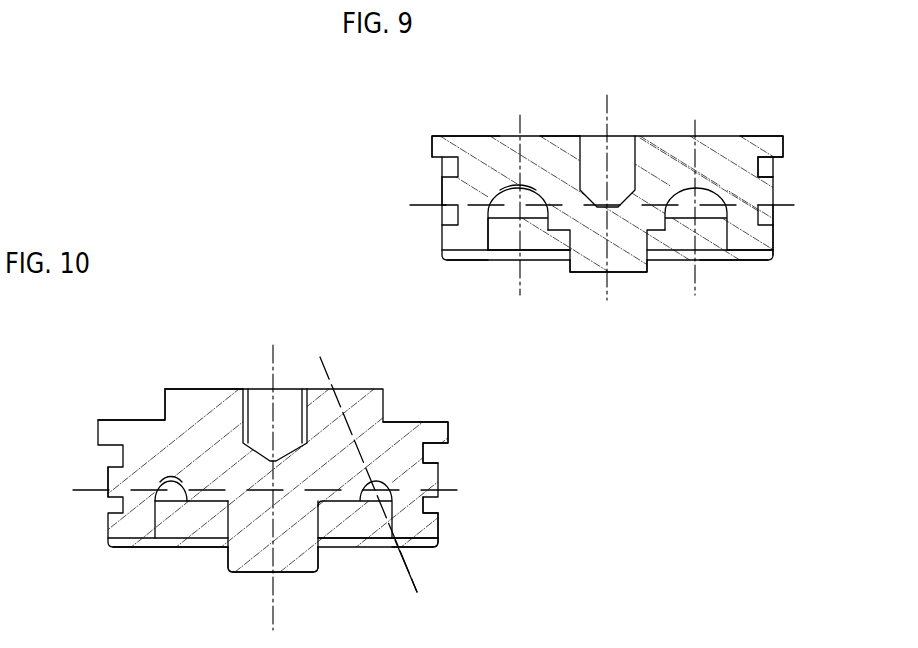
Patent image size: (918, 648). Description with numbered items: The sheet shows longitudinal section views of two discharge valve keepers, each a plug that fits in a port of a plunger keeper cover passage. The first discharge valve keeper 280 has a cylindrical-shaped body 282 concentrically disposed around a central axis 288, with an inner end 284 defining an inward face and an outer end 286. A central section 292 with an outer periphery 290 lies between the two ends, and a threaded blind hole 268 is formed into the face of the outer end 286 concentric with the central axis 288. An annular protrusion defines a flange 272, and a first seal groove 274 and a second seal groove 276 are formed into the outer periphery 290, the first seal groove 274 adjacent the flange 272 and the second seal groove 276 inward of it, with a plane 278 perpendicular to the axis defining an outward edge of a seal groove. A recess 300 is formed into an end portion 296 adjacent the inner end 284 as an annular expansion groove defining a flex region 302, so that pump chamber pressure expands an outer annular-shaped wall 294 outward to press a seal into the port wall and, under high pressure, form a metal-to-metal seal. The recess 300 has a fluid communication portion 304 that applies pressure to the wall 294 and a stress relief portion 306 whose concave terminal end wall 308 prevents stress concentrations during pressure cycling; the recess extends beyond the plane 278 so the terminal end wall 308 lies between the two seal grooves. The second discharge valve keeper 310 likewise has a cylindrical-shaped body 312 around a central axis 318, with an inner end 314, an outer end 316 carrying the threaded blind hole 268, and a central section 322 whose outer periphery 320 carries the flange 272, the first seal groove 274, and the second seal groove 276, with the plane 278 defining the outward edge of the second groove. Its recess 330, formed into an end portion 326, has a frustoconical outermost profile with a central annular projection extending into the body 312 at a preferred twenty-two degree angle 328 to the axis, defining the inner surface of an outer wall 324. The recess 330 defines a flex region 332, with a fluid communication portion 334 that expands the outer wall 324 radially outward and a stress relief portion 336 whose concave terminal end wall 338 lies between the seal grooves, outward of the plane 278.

In FIG. 9, the discharge valve keeper 280 is at (474, 104).
In FIG. 9, the cylindrical-shaped body 282 is at (475, 145).
In FIG. 9, the outer end 286 is at (563, 136).
In FIG. 9, the central axis 288 is at (611, 112).
In FIG. 9, the threaded blind hole 268 is at (640, 137).
In FIG. 10, the threaded blind hole 268 is at (307, 384).
In FIG. 9, the flange 272 is at (776, 147).
In FIG. 10, the flange 272 is at (452, 432).
In FIG. 9, the first seal groove 274 is at (775, 164).
In FIG. 10, the first seal groove 274 is at (432, 455).
In FIG. 9, the flex region 302 is at (730, 197).
In FIG. 9, the second seal groove 276 is at (773, 217).
In FIG. 10, the second seal groove 276 is at (432, 506).
In FIG. 9, the outer periphery 290 is at (775, 237).
In FIG. 9, the central section 292 is at (758, 243).
In FIG. 9, the end portion 296 is at (753, 261).
In FIG. 9, the inner end 284 is at (620, 274).
In FIG. 9, the fluid communication portion 304 is at (503, 233).
In FIG. 9, the recess 300 is at (500, 243).
In FIG. 9, the outer annular-shaped wall 294 is at (472, 227).
In FIG. 9, the plane 278 is at (433, 204).
In FIG. 10, the plane 278 is at (100, 492).
In FIG. 9, the stress relief portion 306 is at (490, 196).
In FIG. 9, the terminal end wall 308 is at (515, 189).
In FIG. 10, the discharge valve keeper 310 is at (125, 349).
In FIG. 10, the outer end 316 is at (205, 405).
In FIG. 10, the central axis 318 is at (277, 367).
In FIG. 10, the cylindrical-shaped body 312 is at (170, 427).
In FIG. 10, the terminal end wall 338 is at (158, 482).
In FIG. 10, the stress relief portion 336 is at (155, 486).
In FIG. 10, the outer wall 324 is at (136, 514).
In FIG. 10, the recess 330 is at (158, 488).
In FIG. 10, the fluid communication portion 334 is at (163, 512).
In FIG. 10, the inner end 314 is at (247, 573).
In FIG. 10, the angle 328 is at (396, 581).
In FIG. 10, the end portion 326 is at (416, 548).
In FIG. 10, the flex region 332 is at (434, 490).
In FIG. 10, the outer periphery 320 is at (440, 532).
In FIG. 10, the central section 322 is at (437, 522).